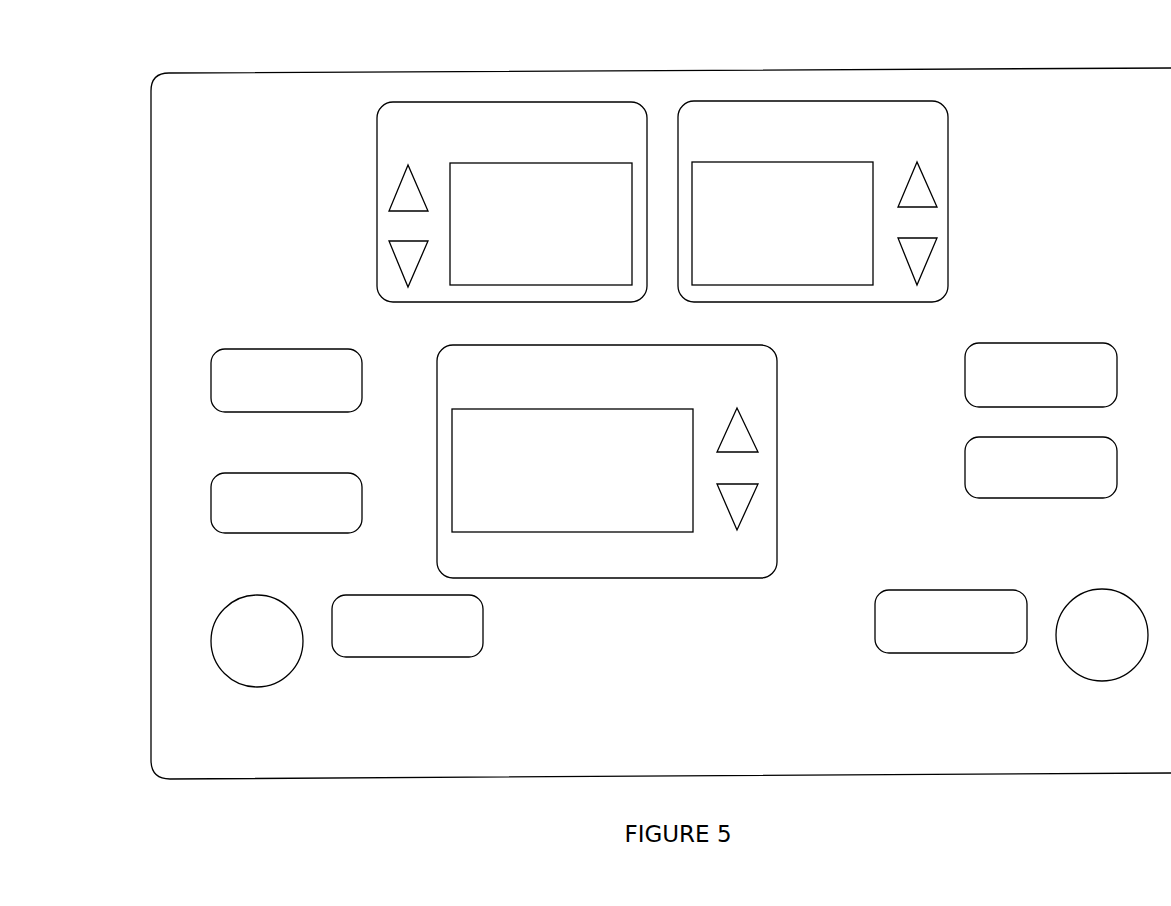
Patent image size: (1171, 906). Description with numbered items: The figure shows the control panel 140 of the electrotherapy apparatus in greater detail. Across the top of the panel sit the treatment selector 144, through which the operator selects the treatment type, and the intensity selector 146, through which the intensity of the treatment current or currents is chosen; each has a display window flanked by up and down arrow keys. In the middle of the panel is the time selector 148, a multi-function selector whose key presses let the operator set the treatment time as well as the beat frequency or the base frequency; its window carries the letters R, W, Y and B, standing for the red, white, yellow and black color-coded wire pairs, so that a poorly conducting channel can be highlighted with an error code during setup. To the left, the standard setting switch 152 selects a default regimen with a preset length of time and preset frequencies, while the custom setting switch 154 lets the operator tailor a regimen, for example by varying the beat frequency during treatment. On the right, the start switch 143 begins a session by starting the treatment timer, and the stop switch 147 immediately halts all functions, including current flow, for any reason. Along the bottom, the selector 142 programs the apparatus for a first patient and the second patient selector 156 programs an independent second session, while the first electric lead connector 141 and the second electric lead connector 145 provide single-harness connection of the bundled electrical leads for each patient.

The control panel 140 is at (925, 30).
The first electric lead connector 141 is at (257, 687).
The selector 142 is at (483, 623).
The start switch 143 is at (1010, 343).
The treatment selector 144 is at (465, 163).
The second electric lead connector 145 is at (1102, 681).
The intensity selector 146 is at (842, 162).
The stop switch 147 is at (995, 498).
The time selector 148 is at (687, 409).
The standard setting switch 152 is at (316, 349).
The custom setting switch 154 is at (318, 473).
The second patient selector 156 is at (875, 622).